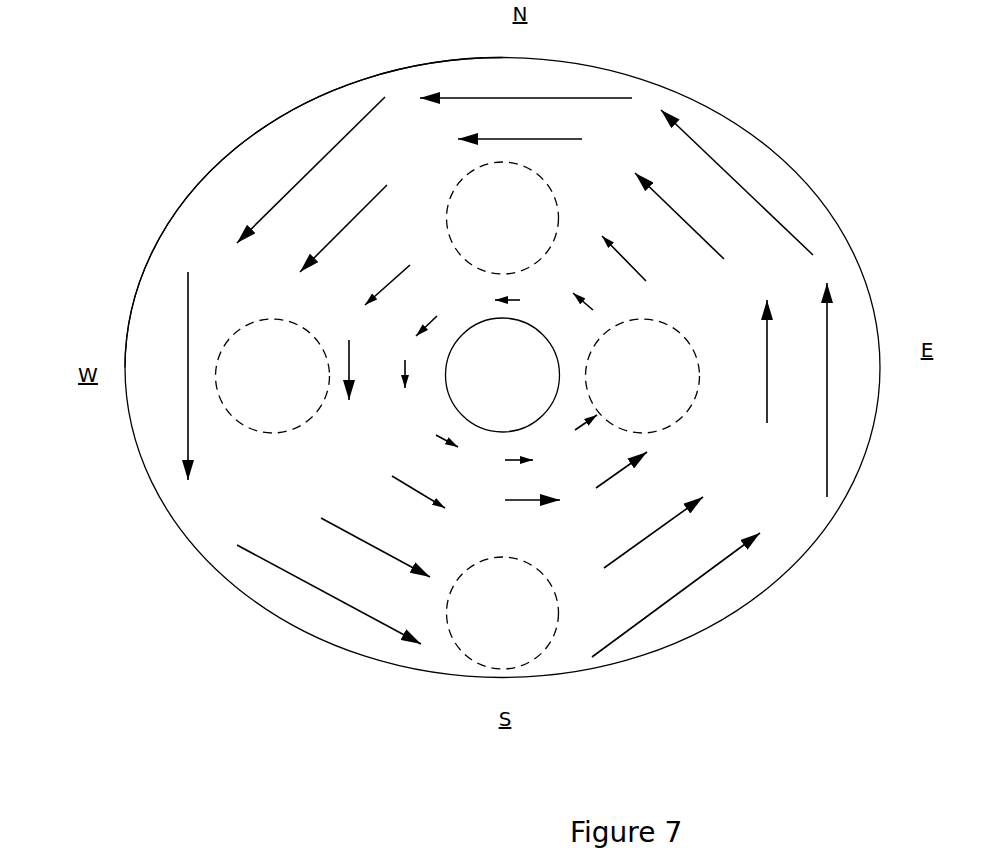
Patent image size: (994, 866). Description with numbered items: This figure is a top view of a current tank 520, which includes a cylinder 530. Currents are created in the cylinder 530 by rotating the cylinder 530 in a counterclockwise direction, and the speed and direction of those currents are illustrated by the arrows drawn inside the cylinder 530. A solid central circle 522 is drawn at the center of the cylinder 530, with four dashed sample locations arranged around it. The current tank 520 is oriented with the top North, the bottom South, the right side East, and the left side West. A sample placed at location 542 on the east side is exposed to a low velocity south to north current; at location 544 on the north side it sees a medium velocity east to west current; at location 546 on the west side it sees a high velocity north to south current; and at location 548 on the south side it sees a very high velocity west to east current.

The current tank 520 is at (197, 552).
The cylinder 530 is at (237, 145).
The central column 522 is at (503, 375).
The location 542 is at (643, 376).
The location 544 is at (503, 218).
The location 546 is at (273, 376).
The location 548 is at (503, 613).